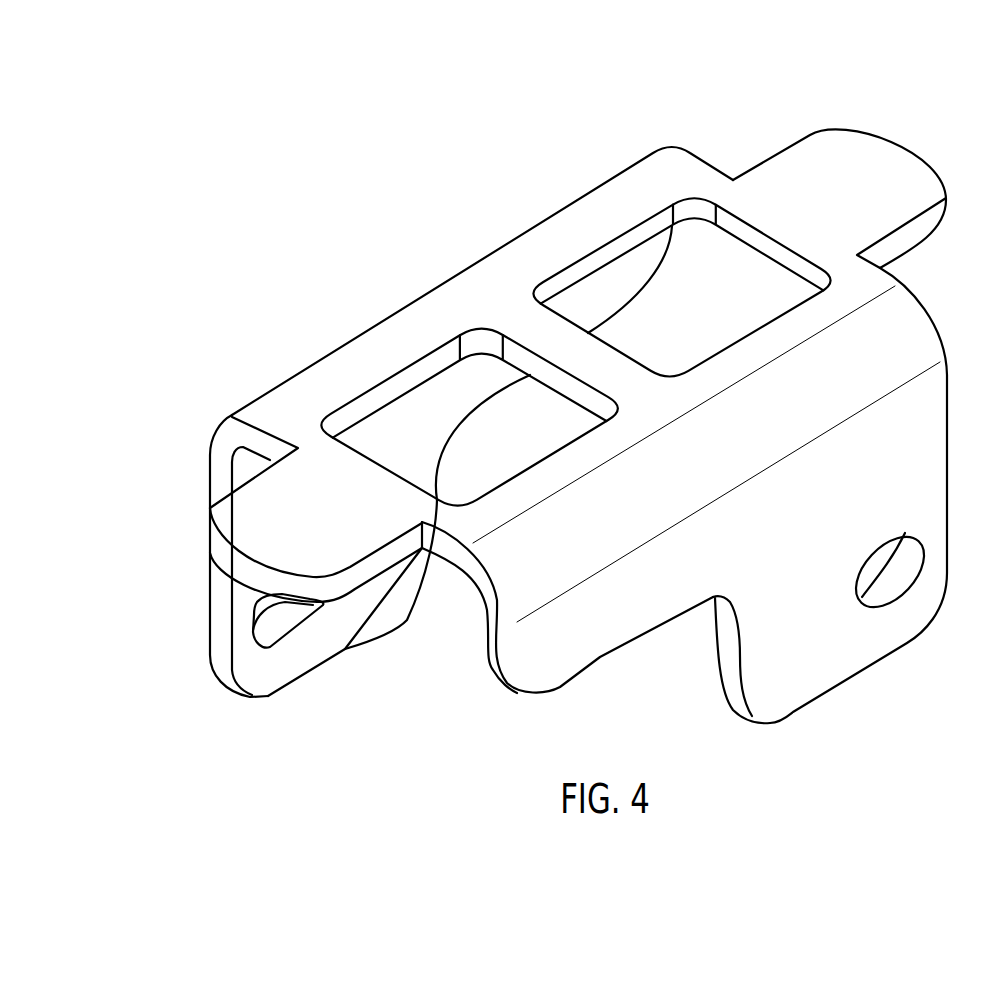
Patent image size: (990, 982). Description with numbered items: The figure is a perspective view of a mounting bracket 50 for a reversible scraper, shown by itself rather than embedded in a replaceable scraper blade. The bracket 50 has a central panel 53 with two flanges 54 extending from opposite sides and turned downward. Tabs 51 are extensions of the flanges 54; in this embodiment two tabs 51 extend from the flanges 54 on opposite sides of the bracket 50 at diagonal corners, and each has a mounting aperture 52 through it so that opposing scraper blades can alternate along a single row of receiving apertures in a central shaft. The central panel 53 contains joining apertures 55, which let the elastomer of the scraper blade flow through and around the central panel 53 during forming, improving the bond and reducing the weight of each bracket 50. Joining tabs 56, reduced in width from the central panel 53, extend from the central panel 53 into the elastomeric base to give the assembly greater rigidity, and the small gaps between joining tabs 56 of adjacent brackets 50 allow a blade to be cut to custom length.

The bracket 50 is at (353, 240).
The tabs 51 is at (327, 641).
The mounting apertures 52 is at (268, 648).
The central panel 53 is at (690, 172).
The flanges 54 is at (612, 297).
The joining apertures 55 is at (582, 261).
The joining tabs 56 is at (895, 156).